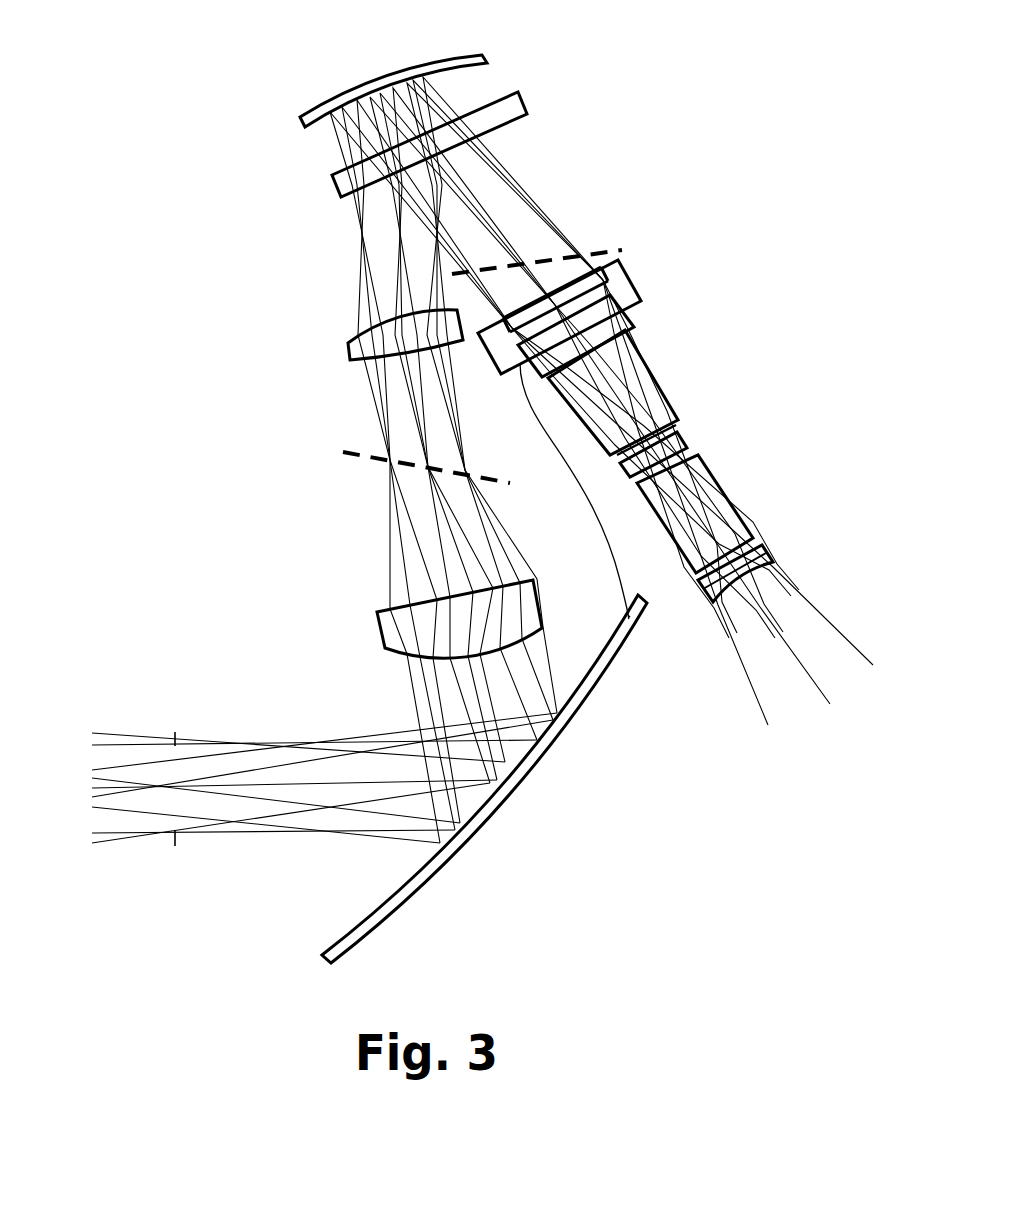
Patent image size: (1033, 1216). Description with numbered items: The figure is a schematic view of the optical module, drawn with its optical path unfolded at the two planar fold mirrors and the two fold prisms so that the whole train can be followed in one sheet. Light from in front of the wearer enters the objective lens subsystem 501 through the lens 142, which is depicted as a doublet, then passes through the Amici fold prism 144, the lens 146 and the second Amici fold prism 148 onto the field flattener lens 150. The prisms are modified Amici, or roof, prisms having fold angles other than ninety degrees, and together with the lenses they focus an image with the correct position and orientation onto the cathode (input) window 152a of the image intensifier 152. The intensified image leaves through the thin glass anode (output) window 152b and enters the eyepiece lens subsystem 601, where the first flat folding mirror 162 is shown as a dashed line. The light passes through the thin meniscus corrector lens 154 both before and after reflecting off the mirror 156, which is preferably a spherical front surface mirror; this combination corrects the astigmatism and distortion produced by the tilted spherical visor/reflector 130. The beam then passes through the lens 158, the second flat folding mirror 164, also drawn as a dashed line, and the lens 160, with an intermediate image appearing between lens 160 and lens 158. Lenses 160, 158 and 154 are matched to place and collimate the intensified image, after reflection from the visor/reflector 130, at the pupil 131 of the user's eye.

The tilted spherical visor/reflector 130 is at (587, 702).
The pupil of the user's eye 131 is at (164, 715).
The lens 142 is at (777, 565).
The Amici fold prism 144 is at (733, 505).
The lens 146 is at (688, 440).
The Amici fold prism 148 is at (653, 372).
The field flattener lens 150 is at (617, 318).
The image intensifier 152 is at (637, 277).
The cathode (input) window 152a is at (612, 303).
The anode (output) window 152b is at (617, 265).
The lens 154 is at (333, 190).
The mirror 156 is at (443, 57).
The lens 158 is at (348, 353).
The lens 160 is at (377, 628).
The first flat folding mirror 162 is at (607, 246).
The second flat folding mirror 164 is at (343, 457).
The objective lens subsystem 501 is at (707, 617).
The eyepiece lens subsystem 601 is at (560, 55).